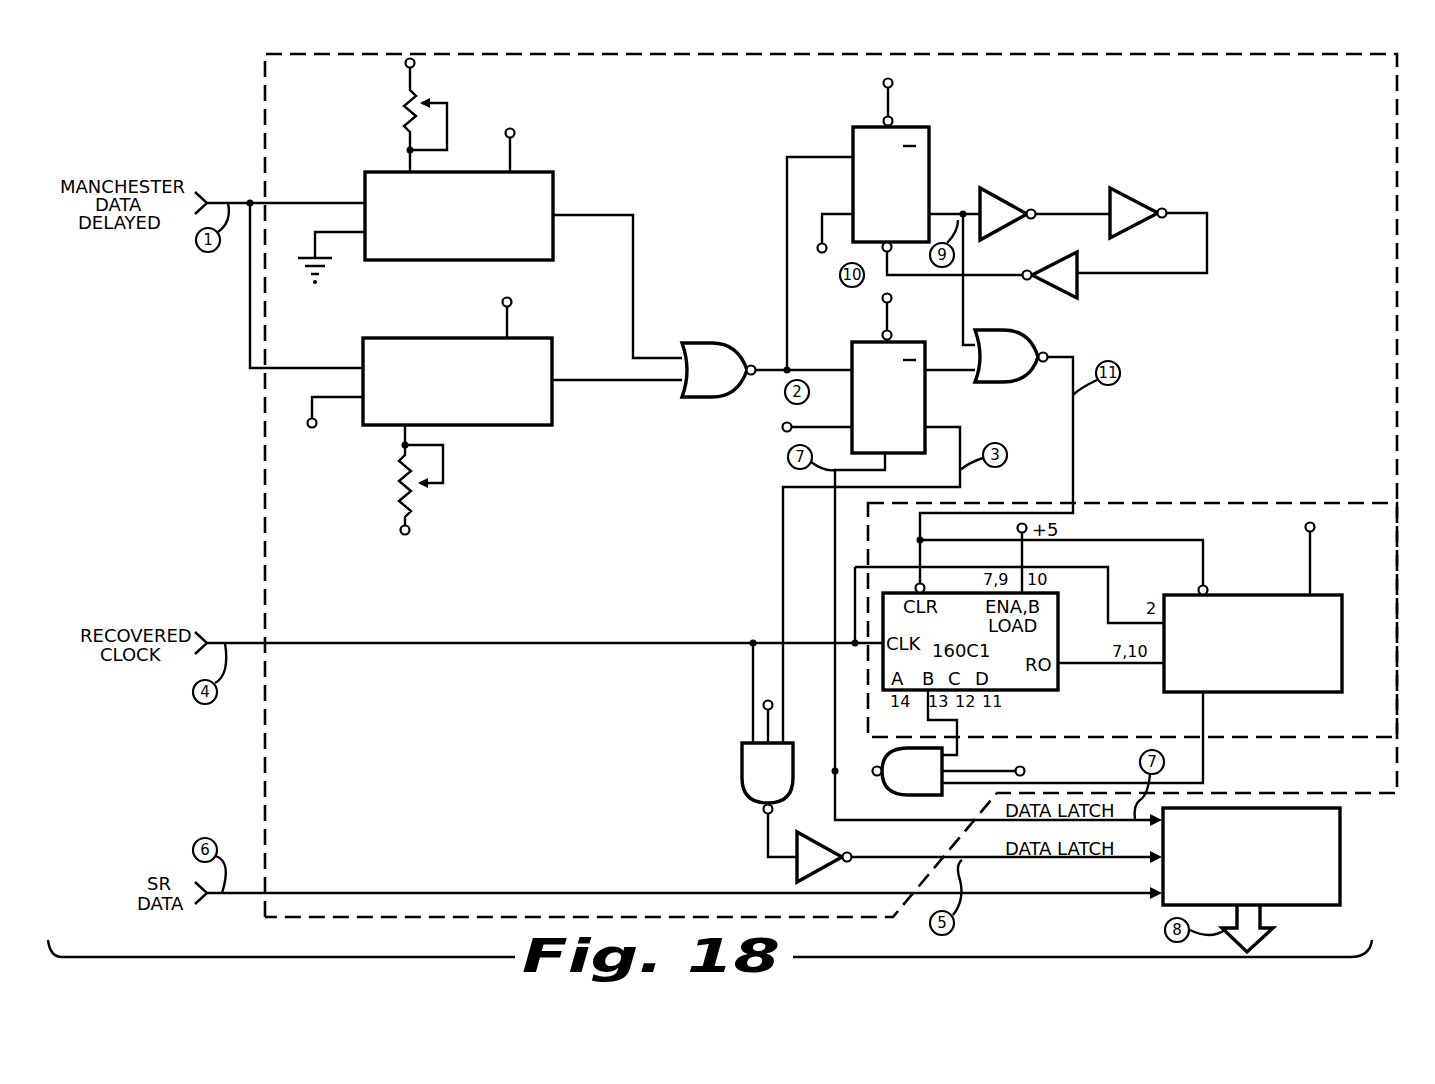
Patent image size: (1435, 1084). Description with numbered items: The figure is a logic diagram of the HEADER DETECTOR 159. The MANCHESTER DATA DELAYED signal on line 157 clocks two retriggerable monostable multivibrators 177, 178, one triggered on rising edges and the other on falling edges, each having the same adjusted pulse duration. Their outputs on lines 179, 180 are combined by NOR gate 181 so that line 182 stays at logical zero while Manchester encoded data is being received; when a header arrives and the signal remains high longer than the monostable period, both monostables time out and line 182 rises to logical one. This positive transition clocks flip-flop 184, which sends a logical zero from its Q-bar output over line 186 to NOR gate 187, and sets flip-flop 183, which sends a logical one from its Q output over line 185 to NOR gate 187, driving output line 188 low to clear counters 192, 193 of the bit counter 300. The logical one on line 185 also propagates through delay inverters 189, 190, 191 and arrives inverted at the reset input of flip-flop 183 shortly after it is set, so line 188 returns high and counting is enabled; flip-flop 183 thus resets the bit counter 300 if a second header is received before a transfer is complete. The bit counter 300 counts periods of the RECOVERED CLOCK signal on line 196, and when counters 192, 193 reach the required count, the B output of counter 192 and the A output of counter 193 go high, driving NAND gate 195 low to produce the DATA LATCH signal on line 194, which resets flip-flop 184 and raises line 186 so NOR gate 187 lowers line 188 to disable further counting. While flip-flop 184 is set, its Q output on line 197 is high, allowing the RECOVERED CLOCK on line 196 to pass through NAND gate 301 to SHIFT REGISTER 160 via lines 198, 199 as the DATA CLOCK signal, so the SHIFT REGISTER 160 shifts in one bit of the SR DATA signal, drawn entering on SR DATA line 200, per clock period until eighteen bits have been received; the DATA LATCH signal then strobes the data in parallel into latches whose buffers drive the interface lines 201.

The MANCHESTER DATA DELAYED line 157 is at (215, 203).
The HEADER DETECTOR 159 is at (1397, 190).
The SHIFT REGISTER 160 is at (1340, 840).
The retriggerable monostable multivibrator 177 is at (482, 172).
The retriggerable monostable multivibrator 178 is at (425, 338).
The monostable output line 179 is at (595, 215).
The monostable output line 180 is at (612, 383).
The NOR gate 181 is at (688, 393).
The NOR gate output line 182 is at (797, 368).
The flip-flop 183 is at (933, 162).
The flip-flop 184 is at (928, 345).
The flip-flop Q output line 185 is at (950, 208).
The flip-flop Q-bar output line 186 is at (963, 258).
The NOR gate 187 is at (1005, 380).
The NOR gate output line 188 is at (1073, 436).
The delay inverter 189 is at (1003, 192).
The delay inverter 190 is at (1128, 192).
The delay inverter 191 is at (1080, 290).
The counter 192 is at (985, 276).
The counter 193 is at (1342, 608).
The DATA LATCH line 194 is at (835, 524).
The NAND gate 195 is at (890, 795).
The RECOVERED CLOCK line 196 is at (440, 643).
The flip-flop Q output line 197 is at (783, 563).
The DATA CLOCK line 198 is at (753, 680).
The DATA CLOCK line 199 is at (895, 857).
The SR data line 200 is at (490, 893).
The interface lines 201 is at (1265, 918).
The bit counter 300 is at (1290, 503).
The NAND gate 301 is at (742, 788).